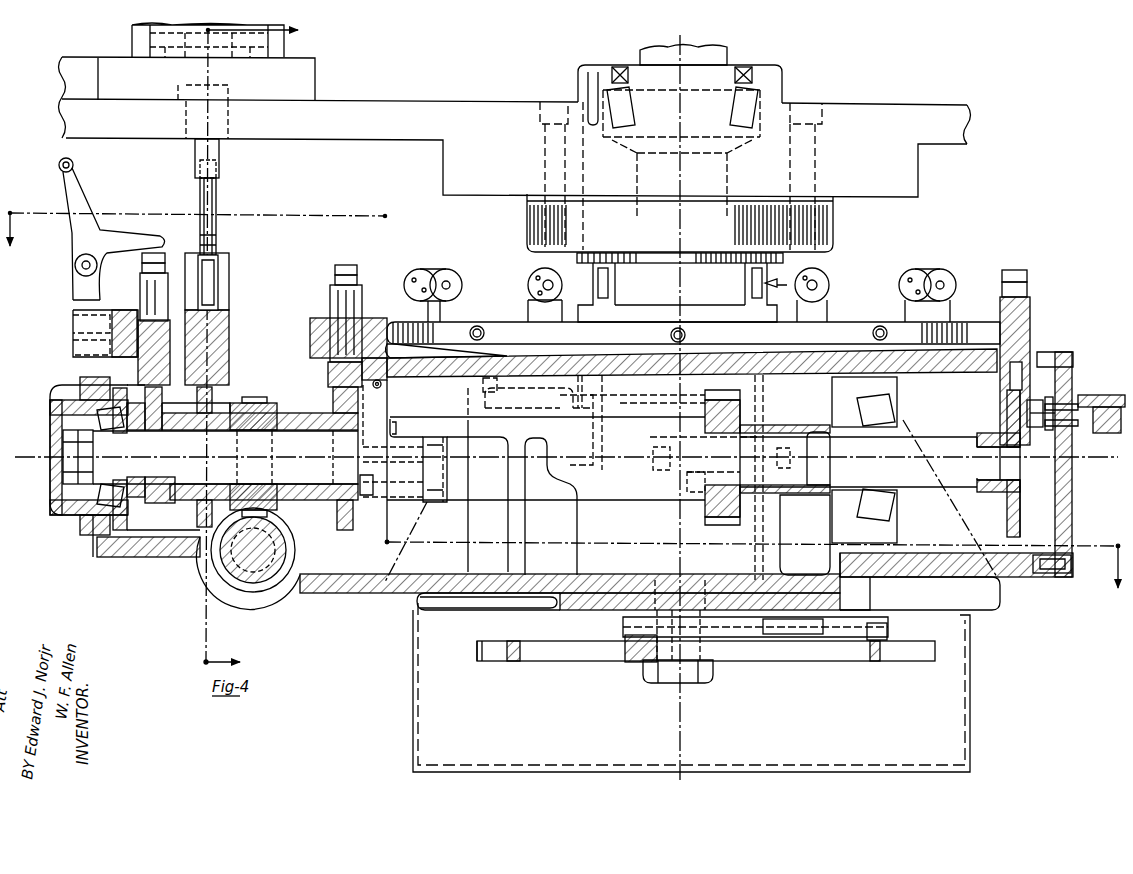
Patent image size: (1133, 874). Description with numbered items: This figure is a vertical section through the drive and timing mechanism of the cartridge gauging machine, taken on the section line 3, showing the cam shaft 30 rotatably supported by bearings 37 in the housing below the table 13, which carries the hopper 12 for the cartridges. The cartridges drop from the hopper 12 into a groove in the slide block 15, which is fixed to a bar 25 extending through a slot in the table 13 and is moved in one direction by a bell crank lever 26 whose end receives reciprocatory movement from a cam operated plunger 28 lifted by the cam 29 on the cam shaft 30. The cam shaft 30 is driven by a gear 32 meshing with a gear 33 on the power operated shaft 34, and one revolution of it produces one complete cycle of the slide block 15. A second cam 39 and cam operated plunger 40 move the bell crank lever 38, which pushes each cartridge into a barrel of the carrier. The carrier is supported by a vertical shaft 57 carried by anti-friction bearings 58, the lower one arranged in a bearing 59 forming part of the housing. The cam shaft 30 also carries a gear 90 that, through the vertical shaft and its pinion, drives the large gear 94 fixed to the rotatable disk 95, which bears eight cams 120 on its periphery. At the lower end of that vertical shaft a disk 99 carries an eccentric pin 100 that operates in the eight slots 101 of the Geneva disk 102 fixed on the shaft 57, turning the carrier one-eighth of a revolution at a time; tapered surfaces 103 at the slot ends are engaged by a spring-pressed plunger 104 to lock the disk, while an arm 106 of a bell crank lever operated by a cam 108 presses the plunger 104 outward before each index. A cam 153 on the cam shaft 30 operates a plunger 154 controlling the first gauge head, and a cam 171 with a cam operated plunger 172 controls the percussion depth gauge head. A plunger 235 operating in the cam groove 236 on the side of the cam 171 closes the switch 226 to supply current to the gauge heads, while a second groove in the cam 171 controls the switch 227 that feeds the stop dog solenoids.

The section line 3- 3 is at (563, 407).
The hopper 12 is at (263, 346).
The table 13 is at (862, 108).
The slide block 15 is at (240, 48).
The bar 25 is at (222, 143).
The bell crank lever 26 is at (218, 186).
The cam operated plunger 28 is at (224, 300).
The cam 29 is at (203, 532).
The cam shaft 30 is at (300, 565).
The gear 32 is at (256, 395).
The gear 33 is at (245, 585).
The power operated shaft 34 is at (205, 598).
The bearings 37 is at (893, 505).
The bell crank lever 38 is at (82, 190).
The cam 39 is at (150, 508).
The cam operated plunger 40 is at (170, 285).
The shaft 57 is at (728, 56).
The anti-friction bearings 58 is at (762, 104).
The bearing 59 is at (575, 552).
The gear 90 is at (706, 505).
The large gear 94 is at (467, 388).
The rotatable disk 95 is at (405, 305).
The disk 99 is at (730, 626).
The pin 100 is at (641, 652).
The slots 101 is at (518, 662).
The Geneva disk 102 is at (596, 661).
The tapered surfaces 103 is at (510, 662).
The spring-pressed plunger 104 is at (880, 650).
The arm 106 is at (842, 632).
The cam 108 is at (622, 626).
The cams 120 is at (480, 305).
The cam 153 is at (340, 532).
The plunger 154 is at (330, 300).
The cam 171 is at (1023, 488).
The cam operated plunger 172 is at (1031, 300).
The switch 226 is at (1108, 434).
The switch 227 is at (1108, 400).
The plunger 235 is at (1036, 405).
The cam groove 236 is at (1043, 575).